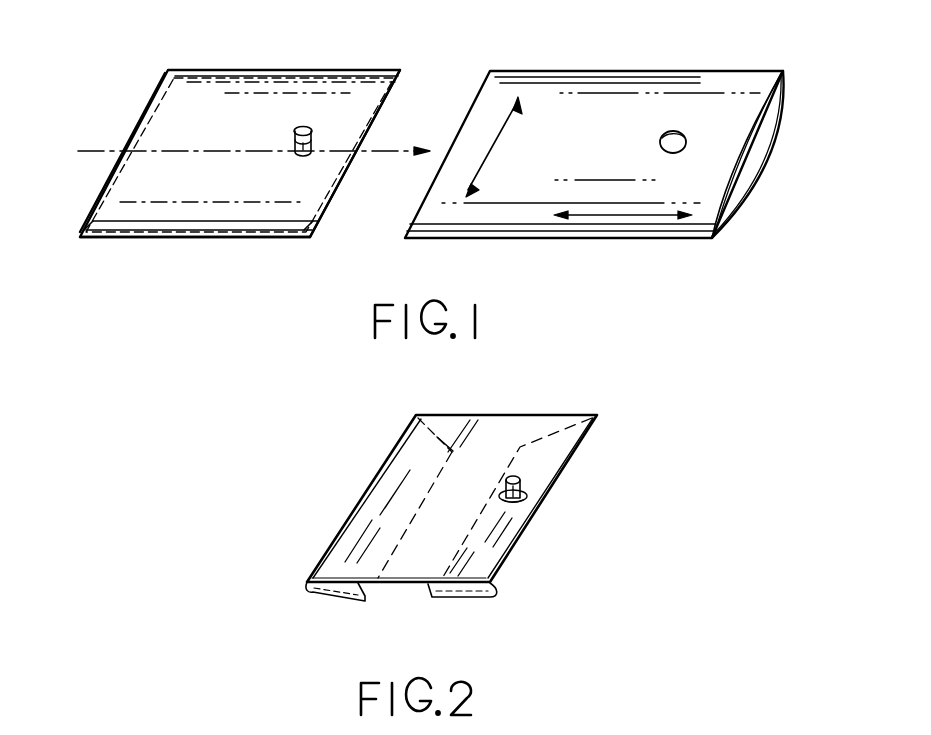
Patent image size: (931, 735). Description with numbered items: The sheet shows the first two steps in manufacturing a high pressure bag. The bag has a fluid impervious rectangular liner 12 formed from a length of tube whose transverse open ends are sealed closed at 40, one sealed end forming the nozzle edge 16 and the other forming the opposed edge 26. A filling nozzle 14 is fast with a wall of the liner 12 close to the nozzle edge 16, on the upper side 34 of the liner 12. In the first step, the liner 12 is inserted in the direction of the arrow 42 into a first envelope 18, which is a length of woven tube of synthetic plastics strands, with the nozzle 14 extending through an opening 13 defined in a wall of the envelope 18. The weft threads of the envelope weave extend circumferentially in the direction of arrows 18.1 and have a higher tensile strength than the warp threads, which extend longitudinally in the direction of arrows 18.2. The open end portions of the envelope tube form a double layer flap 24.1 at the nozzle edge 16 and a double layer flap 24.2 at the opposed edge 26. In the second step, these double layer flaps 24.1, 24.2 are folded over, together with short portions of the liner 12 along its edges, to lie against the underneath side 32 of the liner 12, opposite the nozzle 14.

In FIG. 1, the liner 12 is at (205, 70).
In FIG. 1, the opening 13 is at (685, 123).
In FIG. 2, the opening 13 is at (528, 512).
In FIG. 1, the filling nozzle 14 is at (305, 128).
In FIG. 2, the filling nozzle 14 is at (520, 478).
In FIG. 1, the nozzle edge 16 is at (343, 167).
In FIG. 1, the first envelope 18 is at (748, 142).
In FIG. 2, the first envelope 18 is at (555, 414).
In FIG. 1, the arrow (weft direction) 18.1 is at (492, 147).
In FIG. 1, the arrow (warp direction) 18.2 is at (632, 216).
In FIG. 2, the double layer flap 24.1 is at (462, 598).
In FIG. 2, the double layer flap 24.2 is at (330, 600).
In FIG. 1, the opposed edge 26 is at (113, 170).
In FIG. 1, the underneath side 32 is at (178, 245).
In FIG. 1, the upper side 34 is at (237, 189).
In FIG. 1, the sealed end 40 is at (95, 226).
In FIG. 1, the arrow (insertion direction) 42 is at (393, 152).